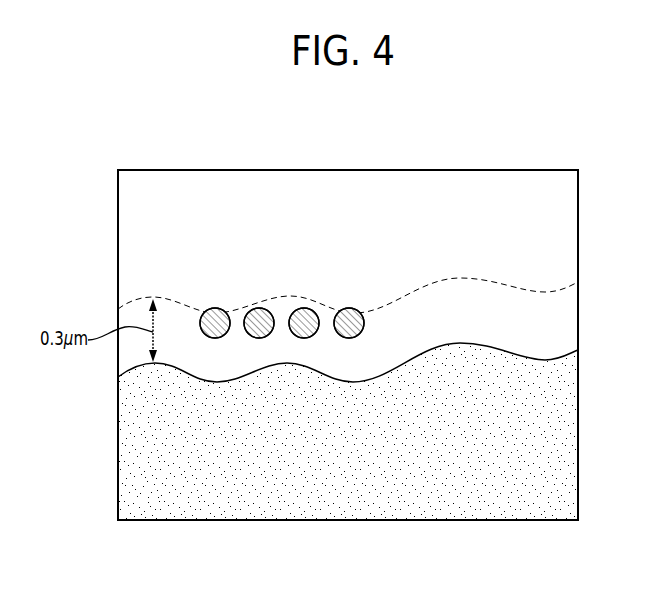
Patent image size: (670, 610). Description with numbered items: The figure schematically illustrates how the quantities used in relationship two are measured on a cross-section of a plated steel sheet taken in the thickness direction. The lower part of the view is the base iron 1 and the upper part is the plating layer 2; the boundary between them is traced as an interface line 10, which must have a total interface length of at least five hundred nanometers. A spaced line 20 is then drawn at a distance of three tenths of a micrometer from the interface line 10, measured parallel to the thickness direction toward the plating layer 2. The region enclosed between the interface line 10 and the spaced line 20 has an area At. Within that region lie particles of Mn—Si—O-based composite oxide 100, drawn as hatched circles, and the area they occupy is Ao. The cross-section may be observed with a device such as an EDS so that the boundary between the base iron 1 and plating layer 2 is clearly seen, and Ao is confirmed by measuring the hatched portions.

The base iron 1 is at (562, 440).
The plating layer 2 is at (562, 220).
The interface line 10 is at (562, 366).
The spaced line 20 is at (560, 292).
The Mn—Si—O-based composite oxide 100 is at (215, 308).
The area of region between interface line and spaced line At is at (562, 329).
The area occupied by Mn—Si—O-based composite oxide Ao is at (313, 337).